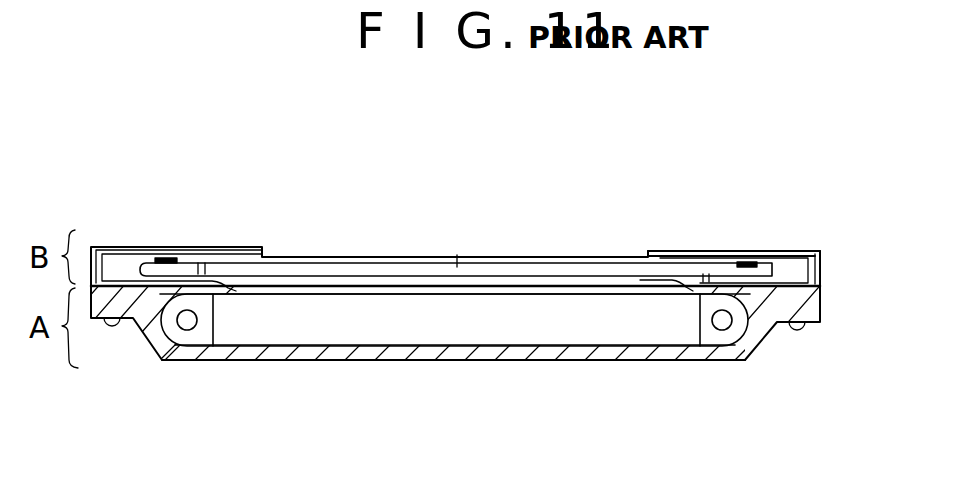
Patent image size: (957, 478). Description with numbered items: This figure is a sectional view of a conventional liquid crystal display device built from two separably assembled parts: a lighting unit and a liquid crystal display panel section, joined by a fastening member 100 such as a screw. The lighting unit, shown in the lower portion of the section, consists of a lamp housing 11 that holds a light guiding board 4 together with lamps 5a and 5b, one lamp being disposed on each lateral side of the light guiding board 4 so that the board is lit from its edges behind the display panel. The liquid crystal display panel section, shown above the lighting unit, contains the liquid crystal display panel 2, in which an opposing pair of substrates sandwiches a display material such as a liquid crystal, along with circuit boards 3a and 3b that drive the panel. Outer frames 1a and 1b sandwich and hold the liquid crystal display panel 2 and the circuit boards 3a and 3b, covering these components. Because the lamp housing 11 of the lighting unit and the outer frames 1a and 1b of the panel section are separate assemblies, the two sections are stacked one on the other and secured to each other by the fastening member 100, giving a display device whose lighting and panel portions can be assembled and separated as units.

The fastening member 100 is at (797, 331).
The outer frame 1a is at (683, 252).
The outer frame 1b is at (777, 287).
The liquid crystal display panel 2 is at (475, 258).
The circuit board 3a is at (182, 270).
The circuit board 3b is at (747, 262).
The light guiding board 4 is at (417, 317).
The lamp 5a is at (187, 320).
The lamp 5b is at (722, 323).
The lamp housing 11 is at (525, 362).